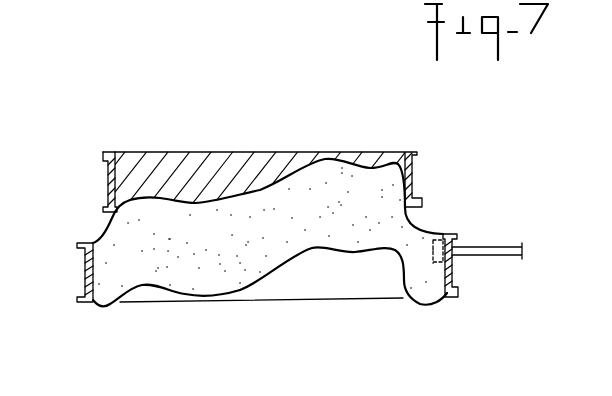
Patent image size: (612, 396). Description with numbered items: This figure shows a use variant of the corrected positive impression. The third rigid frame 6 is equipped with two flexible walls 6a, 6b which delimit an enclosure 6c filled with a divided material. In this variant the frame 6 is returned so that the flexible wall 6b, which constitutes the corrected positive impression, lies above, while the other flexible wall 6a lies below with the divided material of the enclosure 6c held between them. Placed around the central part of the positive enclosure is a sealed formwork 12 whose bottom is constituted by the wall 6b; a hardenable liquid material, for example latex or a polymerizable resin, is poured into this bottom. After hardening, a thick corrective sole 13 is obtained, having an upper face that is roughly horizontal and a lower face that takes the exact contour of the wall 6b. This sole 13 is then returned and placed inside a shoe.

The sealed formwork 12 is at (108, 170).
The thick corrective sole 13 is at (152, 163).
The third rigid frame 6 is at (83, 275).
The flexible wall 6a is at (215, 298).
The flexible wall 6b is at (103, 235).
The enclosure 6c is at (320, 223).